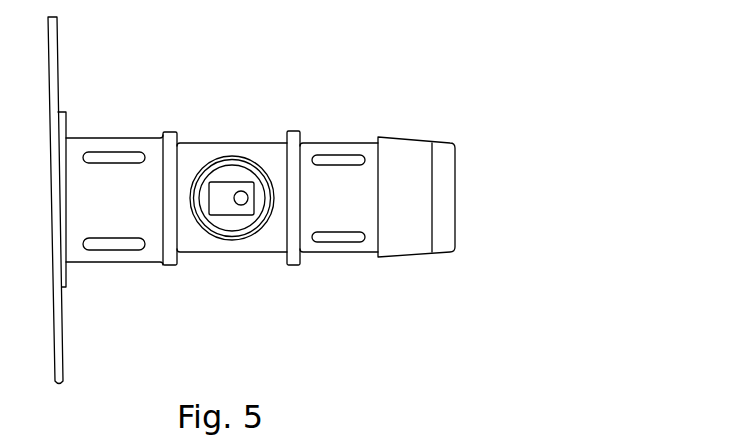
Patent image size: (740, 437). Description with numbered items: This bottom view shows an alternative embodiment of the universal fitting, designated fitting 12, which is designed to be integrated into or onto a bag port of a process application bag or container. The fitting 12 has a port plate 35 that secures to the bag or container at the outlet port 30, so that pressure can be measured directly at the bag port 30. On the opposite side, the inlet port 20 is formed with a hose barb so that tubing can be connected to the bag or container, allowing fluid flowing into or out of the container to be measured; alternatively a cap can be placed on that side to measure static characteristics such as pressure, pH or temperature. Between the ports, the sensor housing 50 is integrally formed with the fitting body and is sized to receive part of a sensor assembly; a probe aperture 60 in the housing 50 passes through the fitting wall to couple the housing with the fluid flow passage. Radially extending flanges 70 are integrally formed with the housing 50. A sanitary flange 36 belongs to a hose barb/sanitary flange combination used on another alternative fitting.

The fitting 12 is at (528, 128).
The inlet port 20 is at (457, 208).
The outlet port 30 is at (53, 177).
The port plate 35 is at (65, 128).
The sanitary flange 36 is at (570, 436).
The sensor housing 50 is at (205, 230).
The probe aperture 60 is at (240, 207).
The radially extending flanges 70 is at (298, 130).